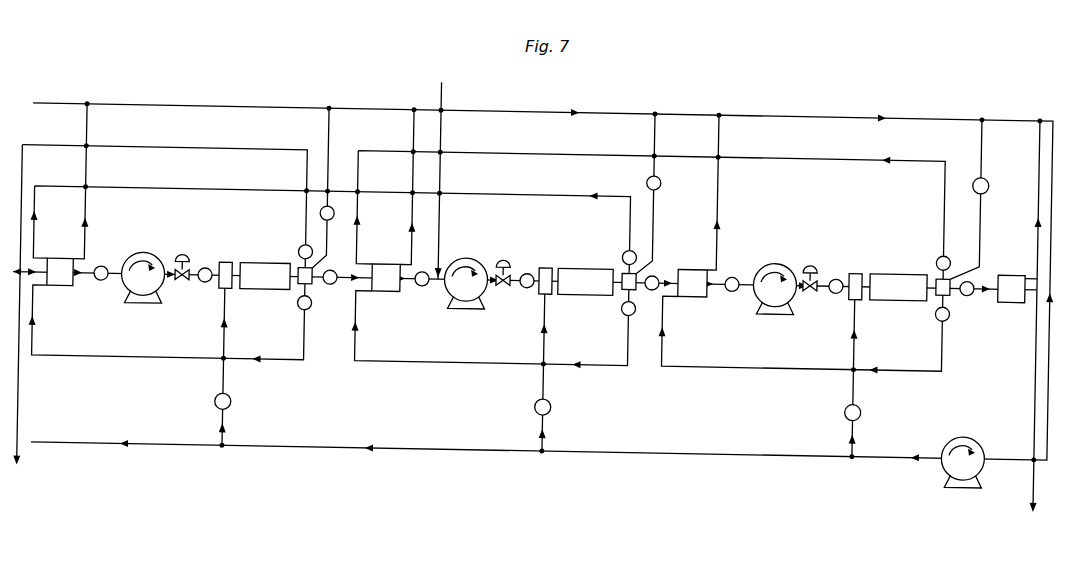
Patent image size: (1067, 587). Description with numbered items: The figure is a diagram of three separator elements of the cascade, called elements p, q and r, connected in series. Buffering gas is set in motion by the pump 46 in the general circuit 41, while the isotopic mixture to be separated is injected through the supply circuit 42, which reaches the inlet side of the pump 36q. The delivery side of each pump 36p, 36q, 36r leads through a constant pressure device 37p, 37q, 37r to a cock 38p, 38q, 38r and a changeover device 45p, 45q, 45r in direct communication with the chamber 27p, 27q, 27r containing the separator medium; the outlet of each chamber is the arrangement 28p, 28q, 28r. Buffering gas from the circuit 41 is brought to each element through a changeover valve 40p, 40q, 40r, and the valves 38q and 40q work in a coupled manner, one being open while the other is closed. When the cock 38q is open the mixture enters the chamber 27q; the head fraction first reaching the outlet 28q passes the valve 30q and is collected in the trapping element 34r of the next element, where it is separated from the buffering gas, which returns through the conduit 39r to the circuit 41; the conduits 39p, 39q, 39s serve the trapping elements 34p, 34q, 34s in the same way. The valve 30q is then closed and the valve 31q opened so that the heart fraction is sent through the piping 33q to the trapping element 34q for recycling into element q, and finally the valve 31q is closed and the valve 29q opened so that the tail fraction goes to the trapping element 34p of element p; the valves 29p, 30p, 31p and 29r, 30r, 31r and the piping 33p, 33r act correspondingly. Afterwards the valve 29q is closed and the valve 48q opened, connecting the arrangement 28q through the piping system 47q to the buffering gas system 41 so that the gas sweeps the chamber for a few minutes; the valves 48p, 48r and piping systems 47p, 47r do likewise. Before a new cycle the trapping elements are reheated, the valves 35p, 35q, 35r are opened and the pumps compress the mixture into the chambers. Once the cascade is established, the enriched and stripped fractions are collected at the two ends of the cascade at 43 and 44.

The chamber 27p is at (273, 291).
The chamber 27q is at (592, 293).
The chamber 27r is at (899, 288).
The chamber outlet 28p is at (298, 274).
The chamber outlet 28q is at (621, 272).
The chamber outlet 28r is at (935, 270).
The valve 29p is at (298, 256).
The valve 29q is at (620, 254).
The valve 29r is at (935, 251).
The valve 30p is at (329, 287).
The valve 30q is at (656, 286).
The valve 30r is at (968, 291).
The valve 31p is at (300, 310).
The valve 31q is at (627, 312).
The valve 31r is at (939, 316).
The recycle line 33p is at (143, 367).
The recycle line 33q is at (426, 367).
The recycle line 33r is at (786, 369).
The trapping element 34p is at (62, 291).
The trapping element 34q is at (386, 295).
The trapping element 34r is at (693, 299).
The trapping element 34s is at (1015, 273).
The valve 35p is at (101, 288).
The valve 35q is at (422, 288).
The valve 35r is at (733, 290).
The pump 36p is at (145, 299).
The pump 36q is at (469, 296).
The pump 36r is at (778, 303).
The constant pressure device 37p is at (183, 287).
The constant pressure device 37q is at (504, 287).
The constant pressure device 37r is at (811, 288).
The cock 38p is at (206, 269).
The cock 38q is at (525, 268).
The cock 38r is at (837, 271).
The conduit 39p is at (84, 220).
The conduit 39q is at (411, 245).
The conduit 39r is at (717, 212).
The conduit 39s is at (1036, 181).
The changeover valve 40p is at (236, 406).
The changeover valve 40q is at (554, 408).
The changeover valve 40r is at (863, 408).
The buffering gas circuit 41 is at (353, 452).
The supply circuit 42 is at (438, 171).
The cascade end 43 is at (1030, 498).
The cascade end 44 is at (23, 318).
The changeover device 45p is at (228, 270).
The changeover device 45q is at (548, 270).
The changeover device 45r is at (859, 270).
The pump 46 is at (958, 462).
The piping system 47p is at (325, 156).
The piping system 47q is at (652, 138).
The piping system 47r is at (976, 138).
The valve 48p is at (318, 219).
The valve 48q is at (659, 182).
The valve 48r is at (973, 182).